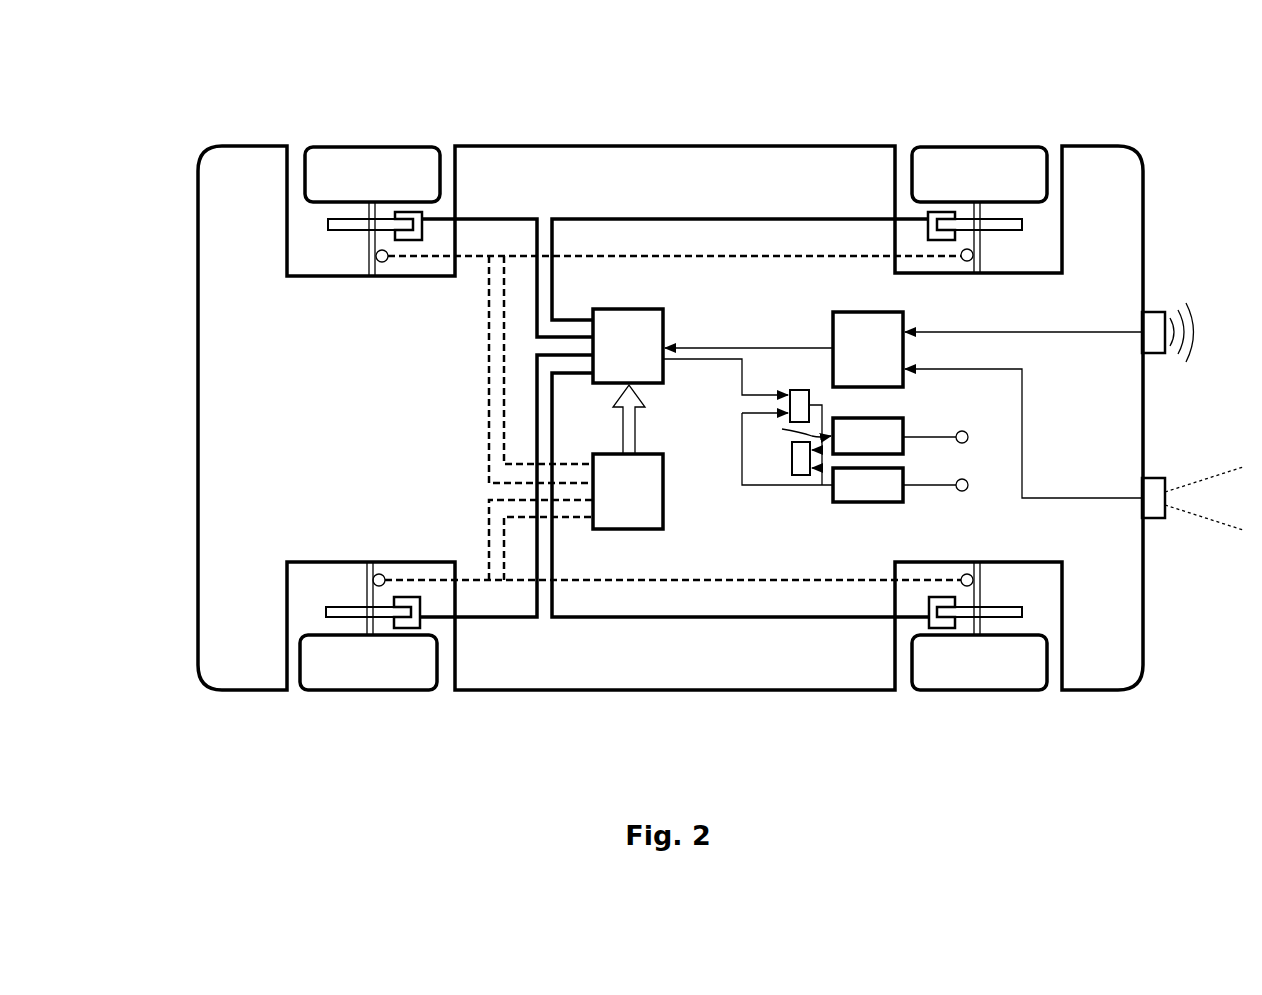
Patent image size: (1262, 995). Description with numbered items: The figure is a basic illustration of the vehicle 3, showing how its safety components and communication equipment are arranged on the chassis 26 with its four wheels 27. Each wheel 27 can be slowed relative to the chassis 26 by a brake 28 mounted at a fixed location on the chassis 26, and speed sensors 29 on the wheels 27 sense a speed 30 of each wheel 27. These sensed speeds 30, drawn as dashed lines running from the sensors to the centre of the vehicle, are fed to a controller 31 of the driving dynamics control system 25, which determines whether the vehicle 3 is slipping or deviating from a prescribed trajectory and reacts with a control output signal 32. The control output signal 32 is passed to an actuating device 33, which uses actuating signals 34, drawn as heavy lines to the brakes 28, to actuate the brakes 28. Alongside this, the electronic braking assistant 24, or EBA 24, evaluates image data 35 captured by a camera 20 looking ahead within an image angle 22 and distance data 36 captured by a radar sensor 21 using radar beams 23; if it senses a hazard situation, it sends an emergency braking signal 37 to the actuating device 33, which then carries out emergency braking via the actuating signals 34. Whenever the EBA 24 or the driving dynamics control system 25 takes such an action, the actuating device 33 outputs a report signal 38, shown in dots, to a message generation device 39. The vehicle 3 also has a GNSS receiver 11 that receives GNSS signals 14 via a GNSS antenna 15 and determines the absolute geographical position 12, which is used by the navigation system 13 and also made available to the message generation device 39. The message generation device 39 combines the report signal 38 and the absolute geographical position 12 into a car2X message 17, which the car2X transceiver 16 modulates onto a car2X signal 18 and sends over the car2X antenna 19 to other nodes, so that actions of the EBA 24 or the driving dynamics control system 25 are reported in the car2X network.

The vehicle 3 is at (145, 72).
The GNSS receiver 11 is at (890, 503).
The absolute geographical position 12 is at (832, 488).
The navigation system 13 is at (792, 466).
The GNSS signals 14 is at (937, 485).
The GNSS antenna 15 is at (968, 485).
The car2X transceiver 16 is at (900, 418).
The car2X message 17 is at (791, 428).
The car2X signal 18 is at (953, 432).
The car2X antenna 19 is at (968, 437).
The camera 20 is at (1150, 478).
The radar sensor 21 is at (1152, 312).
The image angle 22 is at (1207, 478).
The radar beams 23 is at (1200, 330).
The electronic braking assistant 24 is at (842, 312).
The driving dynamics control system 25 is at (460, 403).
The chassis 26 is at (665, 146).
The wheels 27 is at (342, 147).
The brake 28 is at (333, 232).
The speed sensors 29 is at (384, 265).
The speed 30 is at (470, 258).
The controller 31 is at (663, 473).
The control output signal 32 is at (635, 425).
The actuating device 33 is at (642, 309).
The actuating signals 34 is at (508, 218).
The image data 35 is at (1063, 498).
The distance data 36 is at (1077, 332).
The emergency braking signal 37 is at (763, 347).
The report signal 38 is at (770, 396).
The message generation device 39 is at (800, 390).